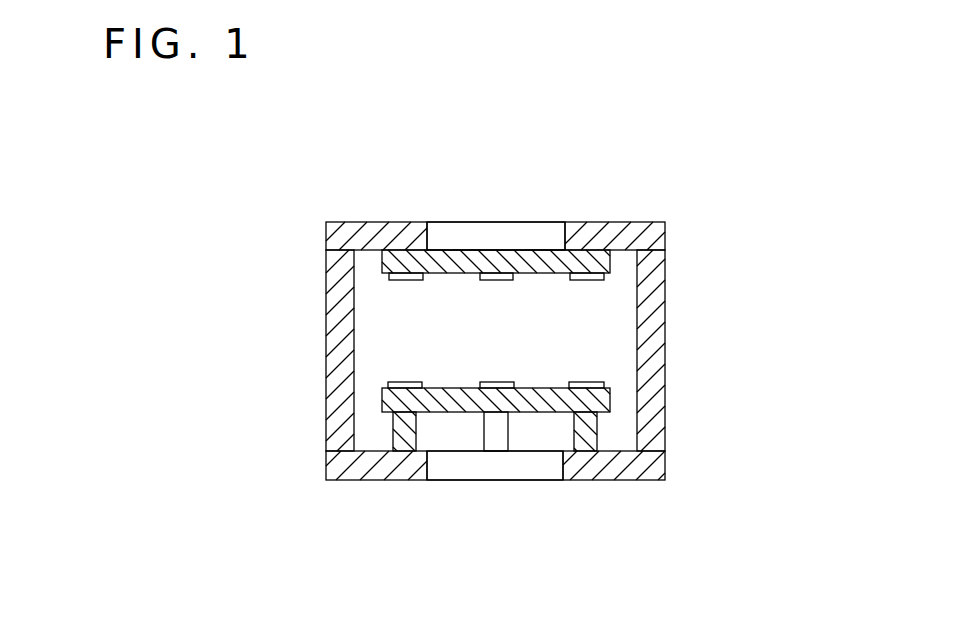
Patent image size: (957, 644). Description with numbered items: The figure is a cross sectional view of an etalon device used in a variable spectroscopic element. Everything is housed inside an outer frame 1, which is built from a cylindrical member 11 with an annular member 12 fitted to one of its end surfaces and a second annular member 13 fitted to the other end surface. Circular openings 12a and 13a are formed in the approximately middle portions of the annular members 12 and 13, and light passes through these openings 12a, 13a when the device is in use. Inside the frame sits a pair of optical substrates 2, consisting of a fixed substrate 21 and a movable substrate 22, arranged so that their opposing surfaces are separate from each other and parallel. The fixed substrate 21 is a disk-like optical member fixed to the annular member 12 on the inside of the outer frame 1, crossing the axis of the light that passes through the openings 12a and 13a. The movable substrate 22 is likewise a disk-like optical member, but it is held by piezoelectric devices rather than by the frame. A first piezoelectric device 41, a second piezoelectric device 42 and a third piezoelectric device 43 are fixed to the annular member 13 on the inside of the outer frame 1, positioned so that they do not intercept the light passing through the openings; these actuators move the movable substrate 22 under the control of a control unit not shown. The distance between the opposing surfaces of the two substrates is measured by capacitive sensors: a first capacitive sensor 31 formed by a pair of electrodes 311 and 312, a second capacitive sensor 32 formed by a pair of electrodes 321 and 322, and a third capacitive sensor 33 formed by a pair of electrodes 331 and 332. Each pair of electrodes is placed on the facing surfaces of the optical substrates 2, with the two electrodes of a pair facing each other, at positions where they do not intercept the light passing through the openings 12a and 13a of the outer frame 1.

The outer frame 1 is at (242, 288).
The cylindrical member 11 is at (327, 308).
The annular member 12 is at (327, 233).
The circular opening 12a is at (430, 236).
The annular member 13 is at (333, 478).
The circular opening 13a is at (428, 470).
The pair of optical substrates 2 is at (540, 112).
The fixed substrate 21 is at (530, 283).
The movable substrate 22 is at (455, 390).
The first capacitive sensor 31 is at (337, 85).
The electrode 311 is at (402, 383).
The electrode 312 is at (407, 278).
The second capacitive sensor 32 is at (653, 85).
The electrode 321 is at (504, 383).
The electrode 322 is at (540, 305).
The third capacitive sensor 33 is at (752, 305).
The electrode 331 is at (586, 277).
The electrode 332 is at (588, 385).
The first piezoelectric device 41 is at (413, 428).
The second piezoelectric device 42 is at (500, 440).
The third piezoelectric device 43 is at (573, 427).